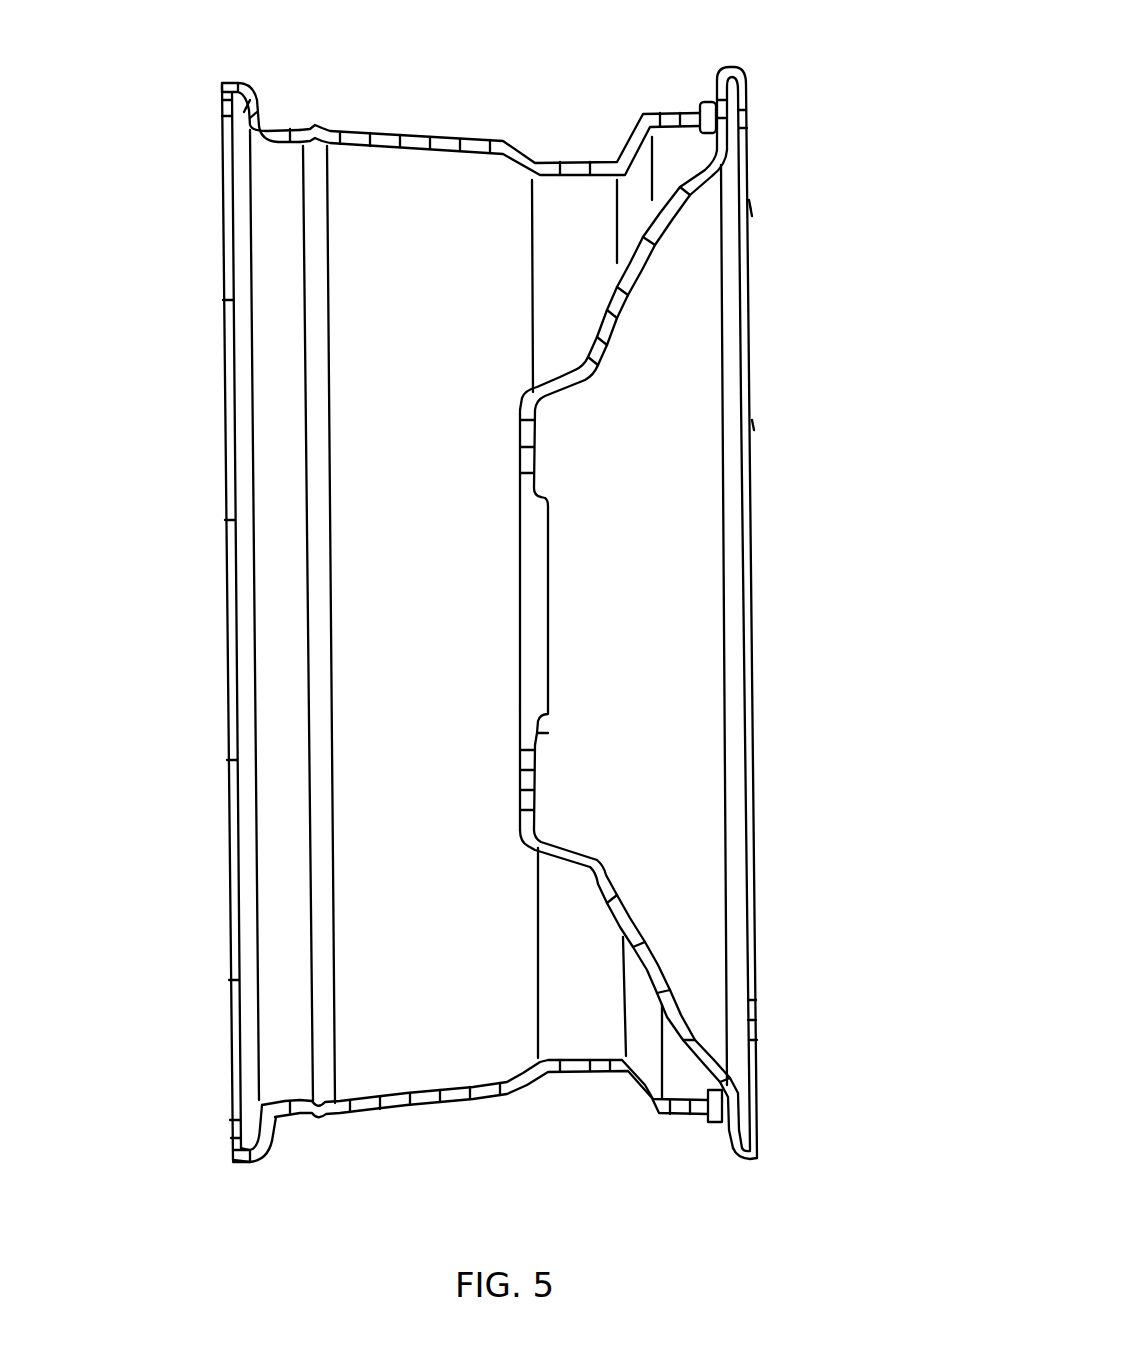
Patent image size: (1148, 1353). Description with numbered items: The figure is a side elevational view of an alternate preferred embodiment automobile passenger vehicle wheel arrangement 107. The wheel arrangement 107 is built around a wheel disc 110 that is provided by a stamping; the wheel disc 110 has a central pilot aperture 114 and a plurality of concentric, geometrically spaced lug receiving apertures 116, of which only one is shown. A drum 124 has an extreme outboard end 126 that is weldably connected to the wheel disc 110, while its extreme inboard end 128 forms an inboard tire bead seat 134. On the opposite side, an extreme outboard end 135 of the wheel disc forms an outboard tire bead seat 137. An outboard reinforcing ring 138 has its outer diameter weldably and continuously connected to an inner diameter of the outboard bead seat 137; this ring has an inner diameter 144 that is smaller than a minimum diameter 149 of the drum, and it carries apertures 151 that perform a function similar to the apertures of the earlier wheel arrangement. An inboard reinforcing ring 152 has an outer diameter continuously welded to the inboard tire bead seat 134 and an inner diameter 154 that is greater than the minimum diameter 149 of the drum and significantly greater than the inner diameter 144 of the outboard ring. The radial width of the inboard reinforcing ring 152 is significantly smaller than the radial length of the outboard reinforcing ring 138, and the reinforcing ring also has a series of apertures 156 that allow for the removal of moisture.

The wheel arrangement 107 is at (447, 92).
The wheel disc 110 is at (540, 427).
The pilot aperture 114 is at (545, 715).
The lug receiving apertures 116 is at (538, 790).
The drum 124 is at (476, 146).
The extreme outboard end 126 is at (697, 103).
The extreme inboard end 128 is at (242, 82).
The inboard tire bead seat 134 is at (258, 104).
The extreme outboard end 135 is at (742, 68).
The outboard tire bead seat 137 is at (746, 86).
The outboard reinforcing ring 138 is at (748, 200).
The inner diameter 144 is at (758, 1012).
The minimum diameter 149 is at (580, 1076).
The apertures 151 is at (758, 1124).
The inboard reinforcing ring 152 is at (228, 1092).
The inner diameter 154 is at (223, 160).
The apertures 156 is at (232, 1123).